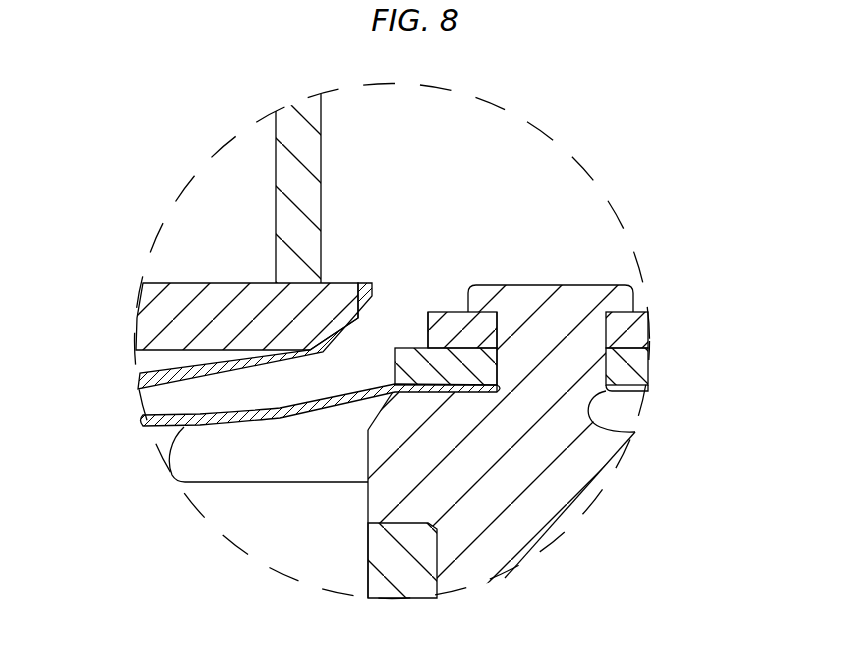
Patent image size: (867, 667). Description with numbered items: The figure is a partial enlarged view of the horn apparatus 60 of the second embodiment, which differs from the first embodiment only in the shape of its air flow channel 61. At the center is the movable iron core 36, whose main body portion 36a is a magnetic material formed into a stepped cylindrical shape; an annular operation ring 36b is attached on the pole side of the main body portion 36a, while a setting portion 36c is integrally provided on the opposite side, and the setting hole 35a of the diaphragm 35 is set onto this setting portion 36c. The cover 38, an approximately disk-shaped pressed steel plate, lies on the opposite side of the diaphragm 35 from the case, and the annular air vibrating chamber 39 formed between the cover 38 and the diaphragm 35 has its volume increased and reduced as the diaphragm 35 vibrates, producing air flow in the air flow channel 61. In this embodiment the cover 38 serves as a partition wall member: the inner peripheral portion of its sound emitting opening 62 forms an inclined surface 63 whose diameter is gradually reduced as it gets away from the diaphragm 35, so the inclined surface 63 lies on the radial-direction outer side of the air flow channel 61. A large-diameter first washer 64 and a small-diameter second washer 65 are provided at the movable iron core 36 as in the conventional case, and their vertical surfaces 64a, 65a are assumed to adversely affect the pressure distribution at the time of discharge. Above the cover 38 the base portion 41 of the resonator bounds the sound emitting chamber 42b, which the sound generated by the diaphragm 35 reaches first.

The diaphragm 35 is at (183, 436).
The setting hole 35a is at (637, 434).
The movable iron core 36 is at (520, 411).
The main body portion 36a is at (482, 475).
The operation ring 36b is at (388, 572).
The setting portion 36c is at (543, 343).
The cover 38 is at (145, 384).
The air vibrating chamber 39 is at (242, 410).
The base portion 41 is at (185, 326).
The sound emitting chamber 42b is at (485, 180).
The horn apparatus 60 is at (615, 152).
The air flow channel 61 is at (402, 303).
The sound emitting opening 62 is at (354, 357).
The inclined surface 63 is at (372, 323).
The first washer 64 is at (652, 373).
The vertical surface 64a is at (380, 412).
The second washer 65 is at (652, 330).
The vertical surface 65a is at (420, 328).